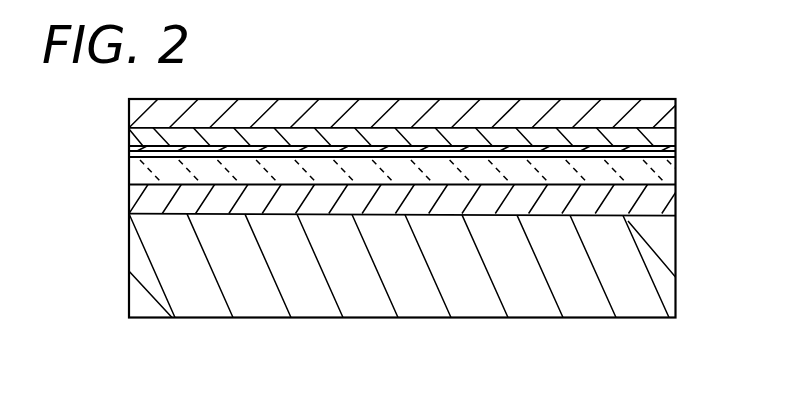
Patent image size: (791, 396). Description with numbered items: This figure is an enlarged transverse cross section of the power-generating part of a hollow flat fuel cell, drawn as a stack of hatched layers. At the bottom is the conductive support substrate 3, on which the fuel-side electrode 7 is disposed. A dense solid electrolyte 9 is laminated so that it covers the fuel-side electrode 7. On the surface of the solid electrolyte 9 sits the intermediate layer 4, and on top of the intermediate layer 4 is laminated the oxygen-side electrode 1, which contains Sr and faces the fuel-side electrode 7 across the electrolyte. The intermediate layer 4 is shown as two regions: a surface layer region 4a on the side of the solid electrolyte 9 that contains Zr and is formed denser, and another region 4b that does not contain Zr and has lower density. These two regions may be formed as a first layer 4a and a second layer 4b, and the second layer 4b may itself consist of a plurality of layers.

The oxygen-side electrode 1 is at (333, 112).
The intermediate layer 4 is at (454, 133).
The surface layer region 4a is at (665, 153).
The other region 4b is at (667, 140).
The solid electrolyte 9 is at (665, 178).
The fuel-side electrode 7 is at (667, 207).
The conductive support substrate 3 is at (412, 302).